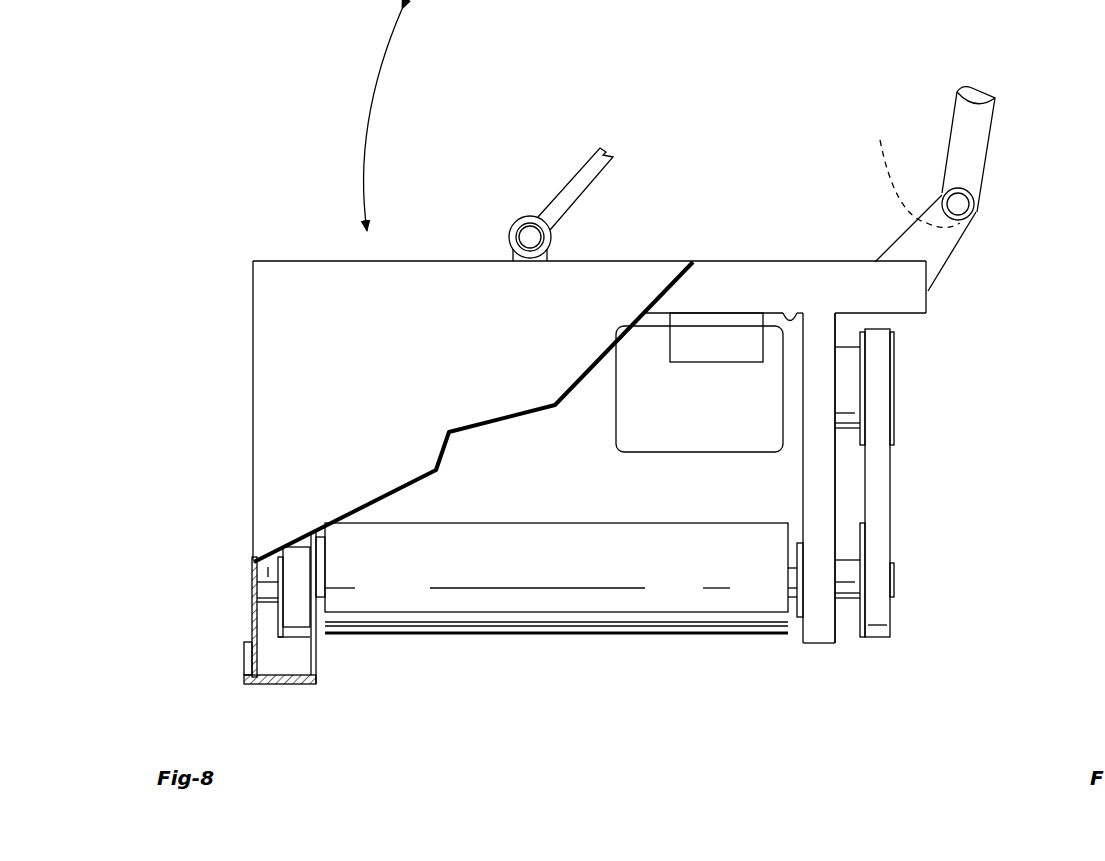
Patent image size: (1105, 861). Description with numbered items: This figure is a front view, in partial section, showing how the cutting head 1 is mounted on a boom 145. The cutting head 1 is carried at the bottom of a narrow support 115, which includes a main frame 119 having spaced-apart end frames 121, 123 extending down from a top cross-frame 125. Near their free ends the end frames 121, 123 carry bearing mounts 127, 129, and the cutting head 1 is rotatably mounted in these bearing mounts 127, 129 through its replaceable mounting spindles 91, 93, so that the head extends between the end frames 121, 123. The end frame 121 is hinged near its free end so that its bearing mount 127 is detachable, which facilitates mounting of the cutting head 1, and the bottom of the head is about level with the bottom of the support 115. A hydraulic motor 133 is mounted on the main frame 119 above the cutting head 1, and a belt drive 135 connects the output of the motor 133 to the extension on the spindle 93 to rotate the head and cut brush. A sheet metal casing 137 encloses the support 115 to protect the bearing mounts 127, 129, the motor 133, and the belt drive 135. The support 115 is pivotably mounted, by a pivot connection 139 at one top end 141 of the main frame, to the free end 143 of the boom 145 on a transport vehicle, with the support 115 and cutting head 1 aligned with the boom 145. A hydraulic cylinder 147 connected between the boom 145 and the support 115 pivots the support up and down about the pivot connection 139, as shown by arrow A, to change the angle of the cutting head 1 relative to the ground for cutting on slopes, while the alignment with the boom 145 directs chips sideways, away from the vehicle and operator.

The cutting head 1 is at (423, 638).
The mounting spindle 91 is at (257, 588).
The mounting spindle 93 is at (782, 580).
The support 115 is at (732, 213).
The main frame 119 is at (652, 258).
The end frame 121 is at (291, 640).
The end frame 123 is at (808, 647).
The top cross-frame 125 is at (795, 313).
The bearing mount 127 is at (268, 572).
The bearing mount 129 is at (838, 615).
The hydraulic motor 133 is at (783, 437).
The belt drive 135 is at (895, 497).
The sheet metal casing 137 is at (319, 335).
The pivot connection 139 is at (982, 228).
The top end 141 is at (928, 287).
The free end 143 is at (907, 173).
The boom 145 is at (992, 154).
The hydraulic cylinder 147 is at (562, 190).
The arrow A is at (380, 83).